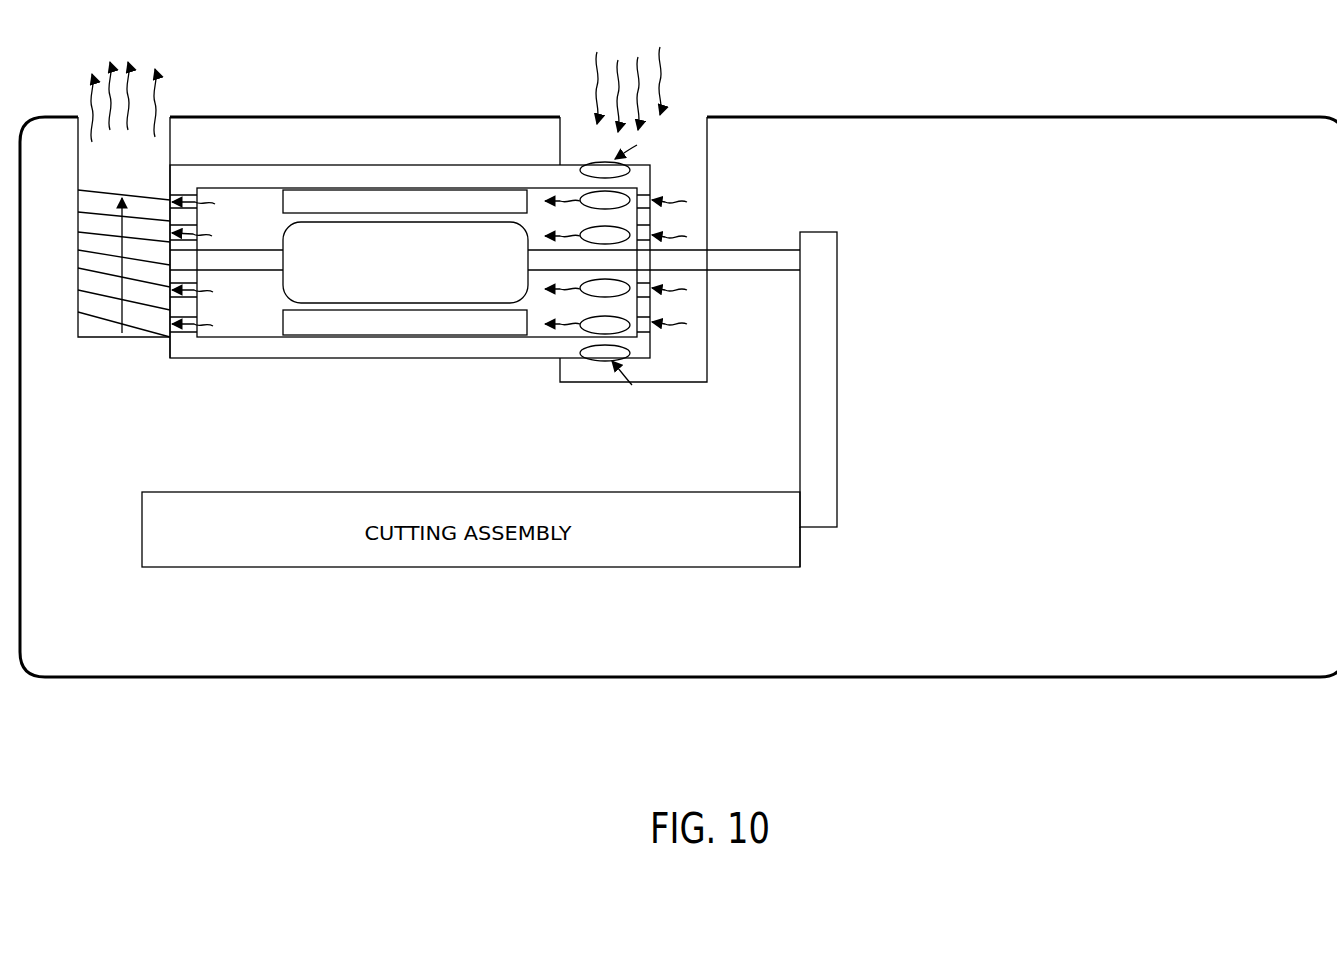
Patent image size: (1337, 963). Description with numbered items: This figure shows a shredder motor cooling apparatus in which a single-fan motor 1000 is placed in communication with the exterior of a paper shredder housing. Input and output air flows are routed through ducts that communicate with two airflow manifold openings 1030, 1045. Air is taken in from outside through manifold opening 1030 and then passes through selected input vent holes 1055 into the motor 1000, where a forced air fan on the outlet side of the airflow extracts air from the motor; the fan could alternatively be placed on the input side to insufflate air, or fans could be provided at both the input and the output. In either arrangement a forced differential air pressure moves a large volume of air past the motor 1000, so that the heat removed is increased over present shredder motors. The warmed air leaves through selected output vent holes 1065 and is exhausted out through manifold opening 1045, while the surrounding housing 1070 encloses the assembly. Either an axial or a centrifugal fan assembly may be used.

The single-fan motor 1000 is at (435, 360).
The airflow manifold opening 1030 is at (702, 117).
The airflow manifold opening 1045 is at (172, 117).
The input vent holes 1055 is at (600, 318).
The output vent holes 1065 is at (198, 296).
The housing 1070 is at (910, 678).